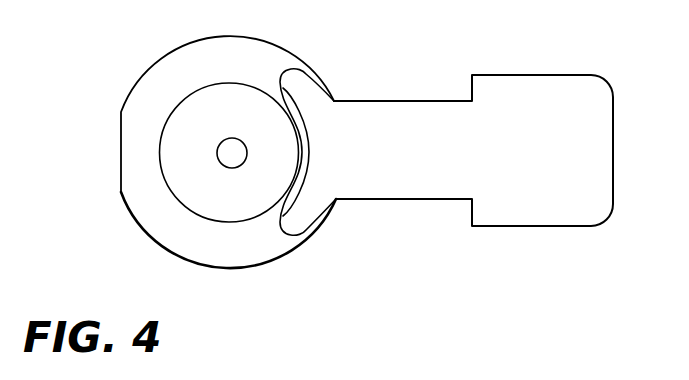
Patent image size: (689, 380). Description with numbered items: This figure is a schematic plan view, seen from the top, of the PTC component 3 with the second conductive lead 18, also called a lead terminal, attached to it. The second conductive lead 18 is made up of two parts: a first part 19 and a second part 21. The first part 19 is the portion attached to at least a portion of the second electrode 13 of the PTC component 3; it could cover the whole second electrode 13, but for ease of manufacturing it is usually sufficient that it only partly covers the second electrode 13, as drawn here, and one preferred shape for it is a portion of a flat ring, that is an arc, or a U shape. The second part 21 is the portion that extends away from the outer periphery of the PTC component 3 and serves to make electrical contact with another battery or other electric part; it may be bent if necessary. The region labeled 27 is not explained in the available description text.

The PTC component 3 is at (345, 176).
The second electrode 13 is at (273, 60).
The hub / inner disc 27 is at (188, 184).
The second part of the second conductive lead 21 is at (363, 185).
The first part of the second conductive lead 19 is at (298, 222).
The second conductive lead 18 is at (446, 189).